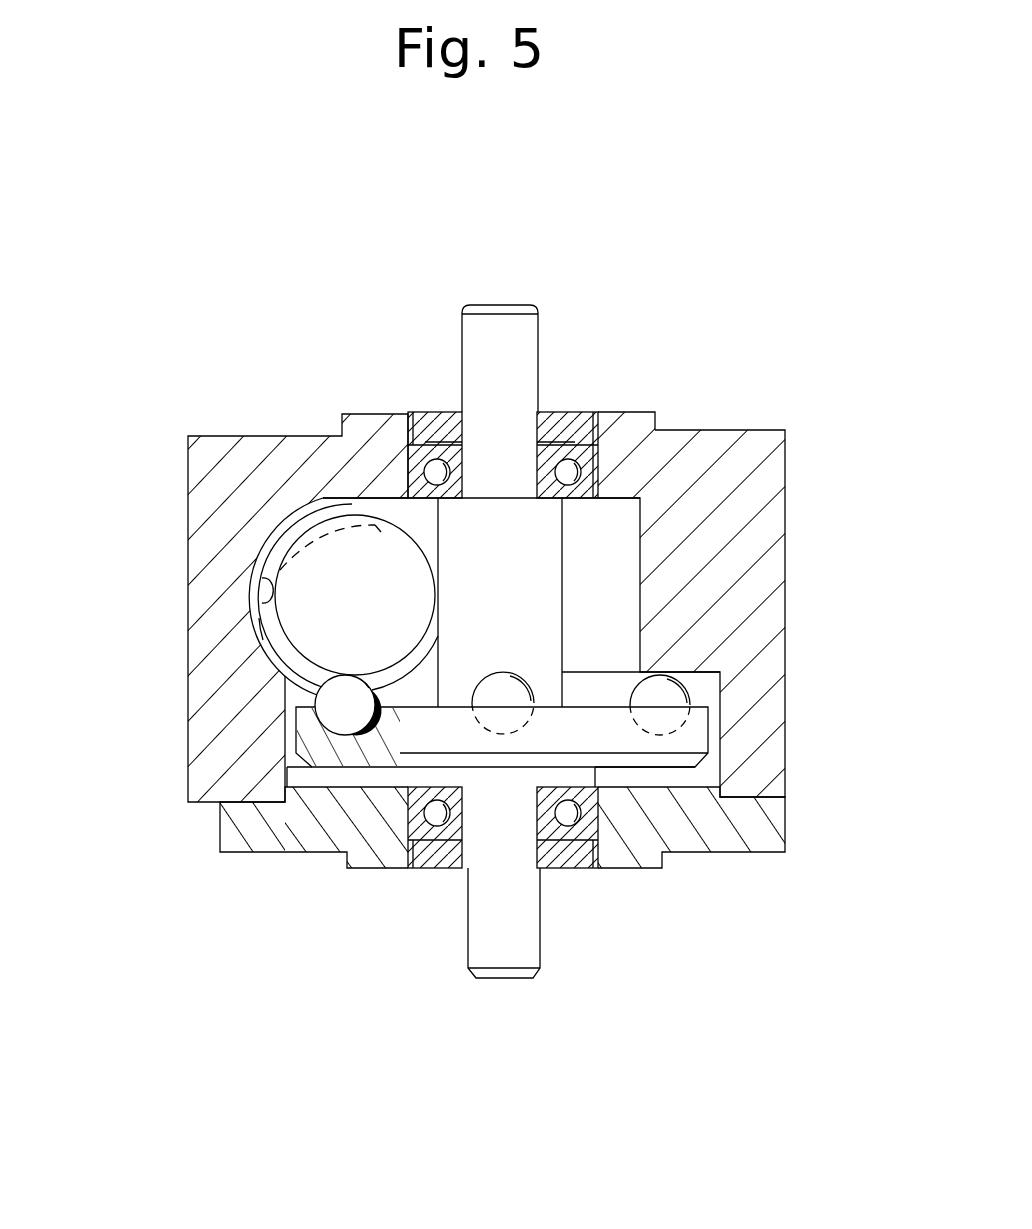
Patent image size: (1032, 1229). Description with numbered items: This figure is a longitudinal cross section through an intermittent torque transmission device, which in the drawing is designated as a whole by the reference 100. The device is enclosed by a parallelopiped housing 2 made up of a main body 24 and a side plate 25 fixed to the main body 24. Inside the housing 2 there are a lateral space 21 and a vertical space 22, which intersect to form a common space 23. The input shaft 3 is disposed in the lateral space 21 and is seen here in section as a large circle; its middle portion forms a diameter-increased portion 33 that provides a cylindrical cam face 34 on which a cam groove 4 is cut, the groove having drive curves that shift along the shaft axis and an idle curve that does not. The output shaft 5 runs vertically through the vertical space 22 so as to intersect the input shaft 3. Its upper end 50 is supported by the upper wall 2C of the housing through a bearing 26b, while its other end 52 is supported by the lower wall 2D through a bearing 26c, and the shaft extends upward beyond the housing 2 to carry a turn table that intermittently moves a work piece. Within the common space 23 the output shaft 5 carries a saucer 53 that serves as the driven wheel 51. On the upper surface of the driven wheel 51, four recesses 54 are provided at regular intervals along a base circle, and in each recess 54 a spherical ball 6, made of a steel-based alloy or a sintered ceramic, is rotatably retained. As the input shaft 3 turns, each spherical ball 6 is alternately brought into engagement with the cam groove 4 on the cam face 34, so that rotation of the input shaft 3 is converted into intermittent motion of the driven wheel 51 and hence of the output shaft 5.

The rotary device 100 is at (730, 399).
The housing 2 is at (281, 430).
The upper wall 2C is at (597, 472).
The lower wall 2D is at (665, 845).
The input shaft 3 is at (271, 544).
The cam groove 4 is at (270, 628).
The output shaft 5 is at (452, 386).
The spherical ball 6 is at (335, 715).
The lateral space 21 is at (250, 602).
The vertical space 22 is at (640, 560).
The common space 23 is at (398, 683).
The main body 24 is at (760, 488).
The side plate 25 is at (722, 822).
The bearing 26b is at (580, 411).
The bearing 26c is at (583, 868).
The diameter-increased portion 33 is at (257, 573).
The cylindrical cam face 34 is at (263, 673).
The upper end 50 is at (510, 402).
The driven wheel 51 is at (582, 705).
The other end 52 is at (507, 915).
The saucer 53 is at (677, 742).
The recess 54 is at (360, 712).